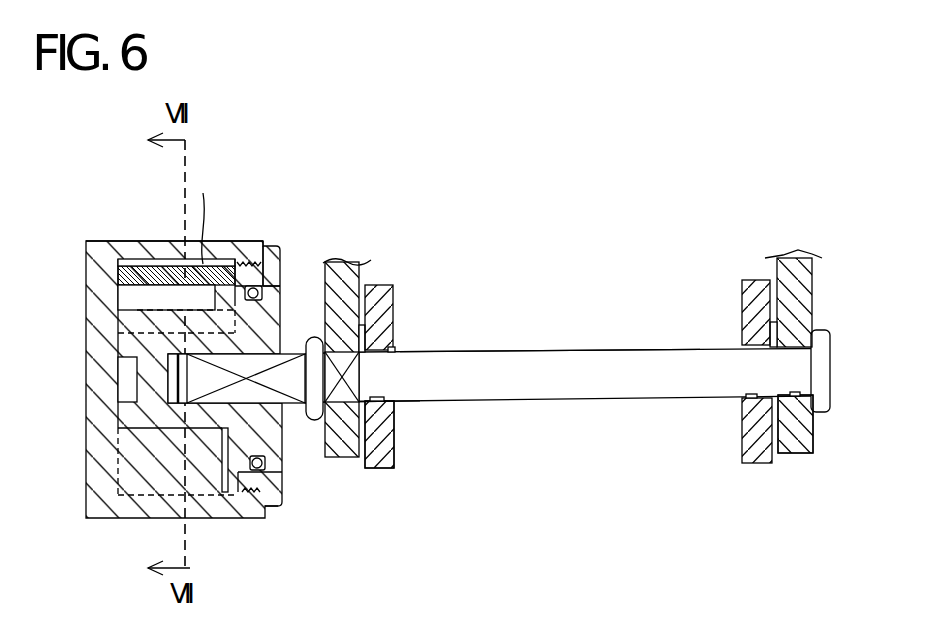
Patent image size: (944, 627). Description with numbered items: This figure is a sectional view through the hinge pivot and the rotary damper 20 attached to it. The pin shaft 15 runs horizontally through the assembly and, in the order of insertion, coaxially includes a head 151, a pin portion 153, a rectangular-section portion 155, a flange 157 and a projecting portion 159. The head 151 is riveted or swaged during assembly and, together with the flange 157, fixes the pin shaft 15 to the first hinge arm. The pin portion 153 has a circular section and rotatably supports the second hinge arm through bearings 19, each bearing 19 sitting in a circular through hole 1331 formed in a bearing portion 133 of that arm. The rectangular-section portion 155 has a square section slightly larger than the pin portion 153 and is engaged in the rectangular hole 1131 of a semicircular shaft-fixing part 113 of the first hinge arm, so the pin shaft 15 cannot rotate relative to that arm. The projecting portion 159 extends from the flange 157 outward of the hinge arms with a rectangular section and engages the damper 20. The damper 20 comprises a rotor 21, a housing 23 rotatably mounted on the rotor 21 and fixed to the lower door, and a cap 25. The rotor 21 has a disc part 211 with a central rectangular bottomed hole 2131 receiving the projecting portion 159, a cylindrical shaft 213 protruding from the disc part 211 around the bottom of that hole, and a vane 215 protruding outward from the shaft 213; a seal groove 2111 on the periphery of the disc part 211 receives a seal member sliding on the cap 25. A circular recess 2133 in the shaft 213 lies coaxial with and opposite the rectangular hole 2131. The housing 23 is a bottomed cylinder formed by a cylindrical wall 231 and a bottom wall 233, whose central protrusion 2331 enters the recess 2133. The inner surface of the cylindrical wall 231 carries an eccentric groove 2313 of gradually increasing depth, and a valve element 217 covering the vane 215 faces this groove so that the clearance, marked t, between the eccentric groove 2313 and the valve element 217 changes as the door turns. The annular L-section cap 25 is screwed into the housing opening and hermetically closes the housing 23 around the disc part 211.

The pin shaft 15 is at (583, 370).
The head 151 is at (831, 348).
The pin portion 153 is at (547, 350).
The rectangular-section portion 155 is at (385, 371).
The flange 157 is at (327, 285).
The projecting portion 159 is at (314, 336).
The bearing 19 is at (366, 333).
The shaft-fixing part 113 is at (610, 390).
The hole 1131 is at (365, 370).
The bearing portion 133 is at (568, 458).
The circular through hole 1331 is at (373, 402).
The damper 20 is at (185, 356).
The rotor 21 is at (186, 356).
The disc part 211 is at (280, 435).
The seal groove 2111 is at (282, 482).
The cylindrical shaft 213 is at (126, 436).
The rectangular bottomed hole 2131 is at (236, 404).
The recess 2133 is at (133, 381).
The vane 215 is at (140, 283).
The valve element 217 is at (208, 298).
The housing 23 is at (152, 348).
The cylindrical wall 231 is at (118, 262).
The eccentric groove 2313 is at (172, 275).
The bottom wall 233 is at (87, 303).
The protrusion 2331 is at (87, 377).
The cap 25 is at (283, 288).